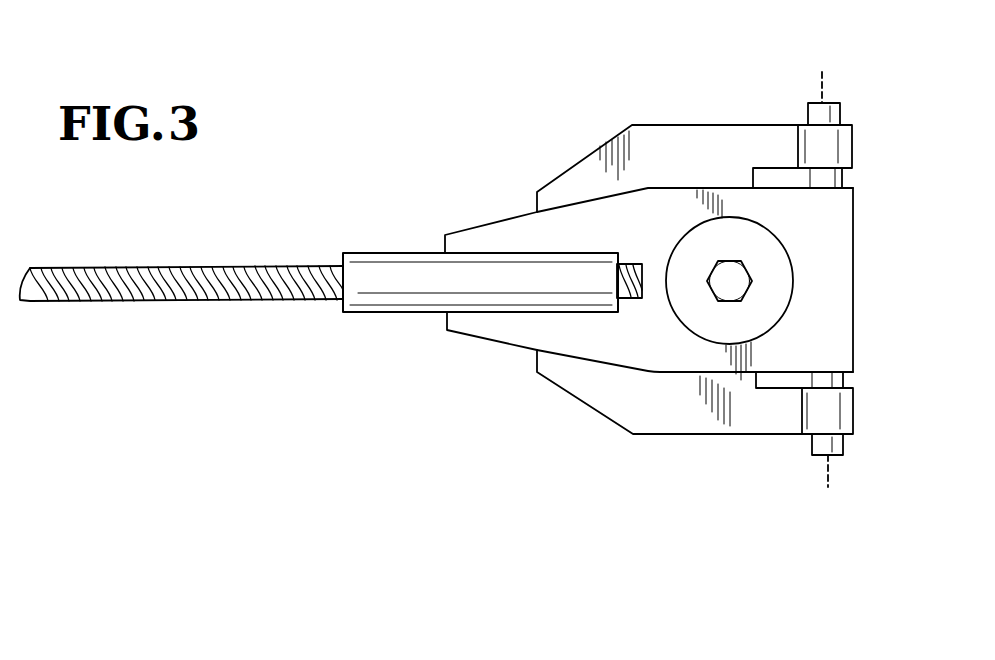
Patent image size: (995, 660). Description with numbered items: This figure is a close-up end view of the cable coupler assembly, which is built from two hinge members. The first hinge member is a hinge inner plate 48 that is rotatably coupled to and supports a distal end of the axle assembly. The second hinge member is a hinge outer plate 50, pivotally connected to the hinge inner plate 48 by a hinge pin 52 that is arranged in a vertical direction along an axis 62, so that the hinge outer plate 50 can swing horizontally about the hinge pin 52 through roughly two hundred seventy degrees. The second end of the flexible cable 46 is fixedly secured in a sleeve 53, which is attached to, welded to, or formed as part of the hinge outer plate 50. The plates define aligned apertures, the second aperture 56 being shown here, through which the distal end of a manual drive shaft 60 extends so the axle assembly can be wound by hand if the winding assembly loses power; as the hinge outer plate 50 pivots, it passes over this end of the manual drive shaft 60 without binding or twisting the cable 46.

The flexible cable 46 is at (118, 282).
The hinge inner plate 48 is at (595, 178).
The hinge outer plate 50 is at (548, 322).
The hinge pin 52 is at (822, 450).
The sleeve 53 is at (408, 293).
The second aperture 56 is at (725, 326).
The manual drive shaft 60 is at (723, 278).
The axis 62 is at (820, 85).